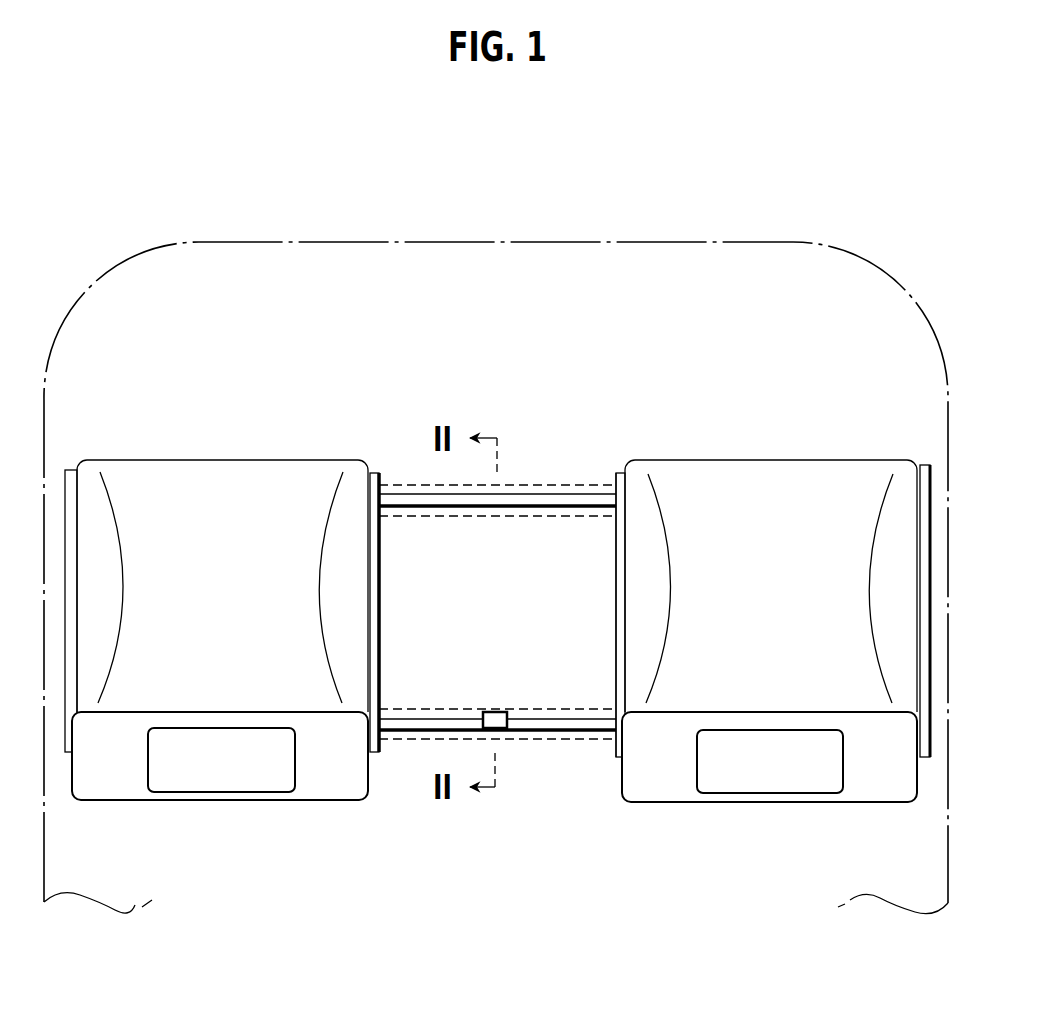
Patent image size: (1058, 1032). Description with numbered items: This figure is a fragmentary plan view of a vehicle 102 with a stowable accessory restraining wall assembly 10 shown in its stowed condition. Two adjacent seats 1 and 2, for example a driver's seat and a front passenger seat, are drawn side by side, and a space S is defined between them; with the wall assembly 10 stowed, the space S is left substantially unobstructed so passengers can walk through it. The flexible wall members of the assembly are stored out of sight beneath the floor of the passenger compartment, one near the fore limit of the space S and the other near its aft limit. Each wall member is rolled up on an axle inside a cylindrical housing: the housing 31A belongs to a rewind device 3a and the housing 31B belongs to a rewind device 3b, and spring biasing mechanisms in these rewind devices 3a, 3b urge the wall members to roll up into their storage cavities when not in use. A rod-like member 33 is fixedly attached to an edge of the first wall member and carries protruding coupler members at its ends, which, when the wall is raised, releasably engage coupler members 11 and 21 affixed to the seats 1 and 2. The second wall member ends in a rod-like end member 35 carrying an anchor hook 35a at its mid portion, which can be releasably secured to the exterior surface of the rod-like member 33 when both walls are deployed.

The vehicle 102 is at (817, 236).
The stowable accessory restraining wall assembly 10 is at (502, 338).
The seat 1 is at (796, 484).
The seat 2 is at (233, 484).
The coupler member 11 is at (615, 585).
The coupler member 21 is at (382, 547).
The rewind device 3a is at (501, 434).
The rewind device 3b is at (503, 750).
The housing 31A is at (557, 484).
The housing 31B is at (563, 741).
The rod-like member 33 is at (515, 504).
The end member 35 is at (513, 724).
The anchor hook 35a is at (490, 710).
The space S is at (563, 642).